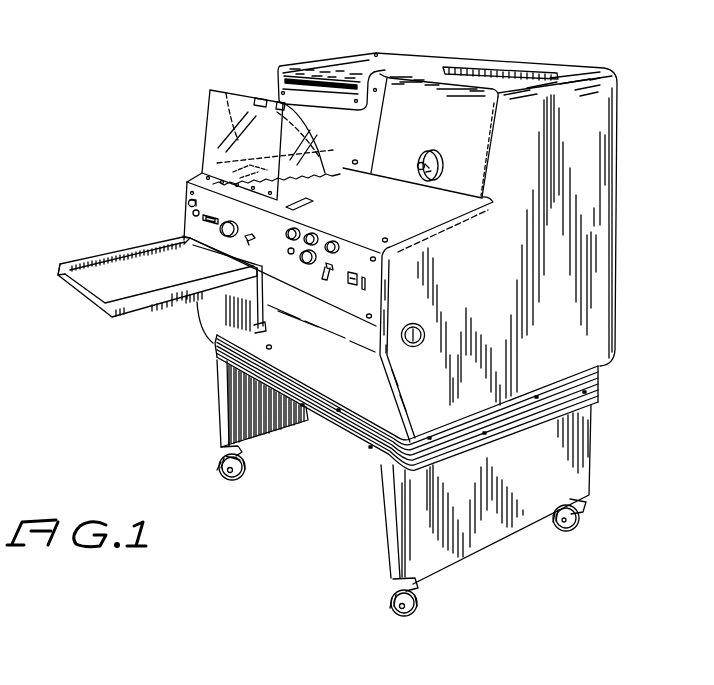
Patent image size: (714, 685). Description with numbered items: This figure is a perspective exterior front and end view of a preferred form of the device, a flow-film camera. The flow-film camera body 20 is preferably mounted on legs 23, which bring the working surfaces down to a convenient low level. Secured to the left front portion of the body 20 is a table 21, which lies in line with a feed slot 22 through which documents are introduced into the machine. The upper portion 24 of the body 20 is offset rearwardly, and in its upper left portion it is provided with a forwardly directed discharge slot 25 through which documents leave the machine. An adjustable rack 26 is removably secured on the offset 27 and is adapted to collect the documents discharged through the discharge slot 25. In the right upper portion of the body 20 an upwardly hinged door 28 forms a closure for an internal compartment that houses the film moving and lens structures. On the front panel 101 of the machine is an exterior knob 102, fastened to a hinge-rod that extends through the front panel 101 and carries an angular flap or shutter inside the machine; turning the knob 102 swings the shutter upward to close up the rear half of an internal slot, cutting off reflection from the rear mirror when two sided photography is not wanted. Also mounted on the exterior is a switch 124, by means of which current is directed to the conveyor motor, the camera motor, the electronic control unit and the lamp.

The flow-film camera body 20 is at (348, 400).
The table 21 is at (145, 313).
The feed slot 22 is at (183, 238).
The legs 23 is at (222, 395).
The upper portion 24 is at (315, 114).
The discharge slot 25 is at (284, 82).
The adjustable rack 26 is at (212, 143).
The offset 27 is at (445, 208).
The upwardly hinged door 28 is at (466, 98).
The front panel 101 is at (193, 213).
The exterior knob 102 is at (302, 263).
The switch 124 is at (338, 268).